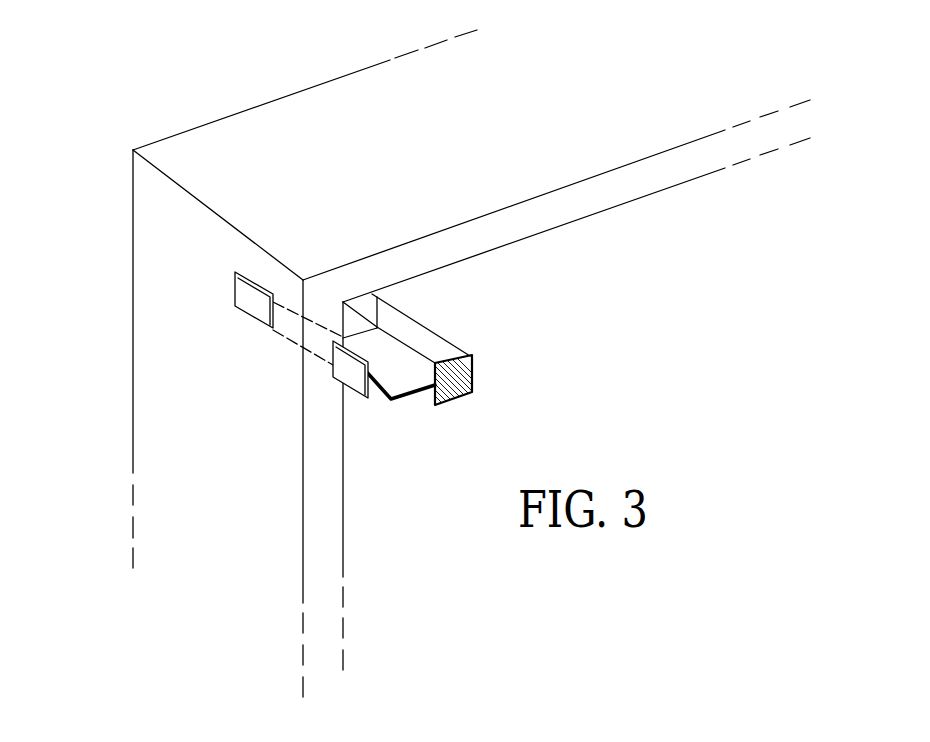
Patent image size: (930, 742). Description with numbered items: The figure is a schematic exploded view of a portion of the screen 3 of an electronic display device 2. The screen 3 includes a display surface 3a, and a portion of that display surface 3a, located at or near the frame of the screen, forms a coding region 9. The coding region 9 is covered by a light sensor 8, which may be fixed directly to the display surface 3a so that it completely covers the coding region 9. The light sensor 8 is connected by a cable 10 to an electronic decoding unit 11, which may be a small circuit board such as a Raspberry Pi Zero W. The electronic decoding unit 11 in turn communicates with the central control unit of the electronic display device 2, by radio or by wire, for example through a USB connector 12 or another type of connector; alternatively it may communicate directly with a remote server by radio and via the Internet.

The electronic display device 2 is at (97, 166).
The screen 3 is at (180, 285).
The display surface 3a is at (663, 213).
The light sensor 8 is at (470, 385).
The coding region 9 is at (367, 303).
The cable 10 is at (407, 397).
The electronic decoding unit 11 is at (347, 370).
The USB connector 12 is at (257, 307).